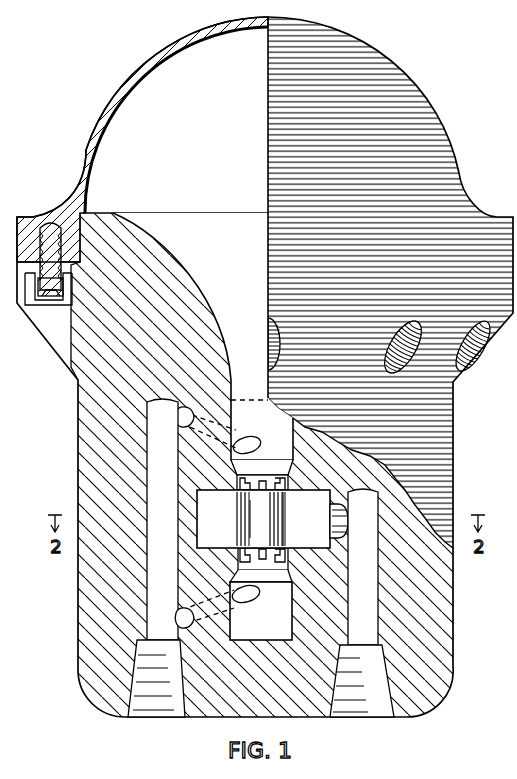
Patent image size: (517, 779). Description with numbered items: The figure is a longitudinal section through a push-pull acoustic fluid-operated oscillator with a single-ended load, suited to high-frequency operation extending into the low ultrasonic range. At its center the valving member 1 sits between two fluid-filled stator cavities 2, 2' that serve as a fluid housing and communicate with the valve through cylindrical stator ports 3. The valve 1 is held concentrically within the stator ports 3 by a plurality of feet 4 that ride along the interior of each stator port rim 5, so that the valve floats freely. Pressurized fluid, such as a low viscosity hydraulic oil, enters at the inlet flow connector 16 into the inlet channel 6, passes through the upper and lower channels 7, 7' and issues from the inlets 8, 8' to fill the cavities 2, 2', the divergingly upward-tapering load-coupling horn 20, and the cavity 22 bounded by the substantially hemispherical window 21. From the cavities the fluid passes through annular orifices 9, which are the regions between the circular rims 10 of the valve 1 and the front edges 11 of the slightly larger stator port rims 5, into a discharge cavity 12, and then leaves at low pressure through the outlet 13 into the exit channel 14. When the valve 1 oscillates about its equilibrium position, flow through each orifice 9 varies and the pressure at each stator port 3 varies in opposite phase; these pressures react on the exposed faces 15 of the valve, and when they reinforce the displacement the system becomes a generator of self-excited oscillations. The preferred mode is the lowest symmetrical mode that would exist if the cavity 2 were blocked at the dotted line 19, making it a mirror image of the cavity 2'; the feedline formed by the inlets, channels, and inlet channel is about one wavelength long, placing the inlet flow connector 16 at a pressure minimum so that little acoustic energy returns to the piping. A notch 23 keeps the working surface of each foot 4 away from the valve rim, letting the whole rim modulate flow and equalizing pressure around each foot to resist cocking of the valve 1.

The valving member 1 is at (262, 522).
The stator cavity 2 is at (262, 440).
The stator cavity 2' is at (261, 605).
The stator port 3 is at (268, 480).
The feet 4 is at (284, 480).
The stator port rim 5 is at (238, 482).
The inlet channel 6 is at (162, 519).
The upper channel 7 is at (177, 423).
The lower channel 7' is at (178, 610).
The inlet 8 is at (226, 435).
The inlet 8' is at (222, 603).
The annular orifice 9 is at (242, 497).
The circular rim 10 is at (282, 547).
The front edge 11 is at (230, 492).
The discharge cavity 12 is at (303, 519).
The outlet 13 is at (346, 520).
The exit channel 14 is at (363, 567).
The exposed face 15 is at (270, 493).
The inlet flow connector 16 is at (261, 670).
The dotted line 19 is at (249, 399).
The load-coupling horn 20 is at (203, 238).
The hemispherical window 21 is at (152, 67).
The cavity 22 is at (175, 120).
The notch 23 is at (287, 490).